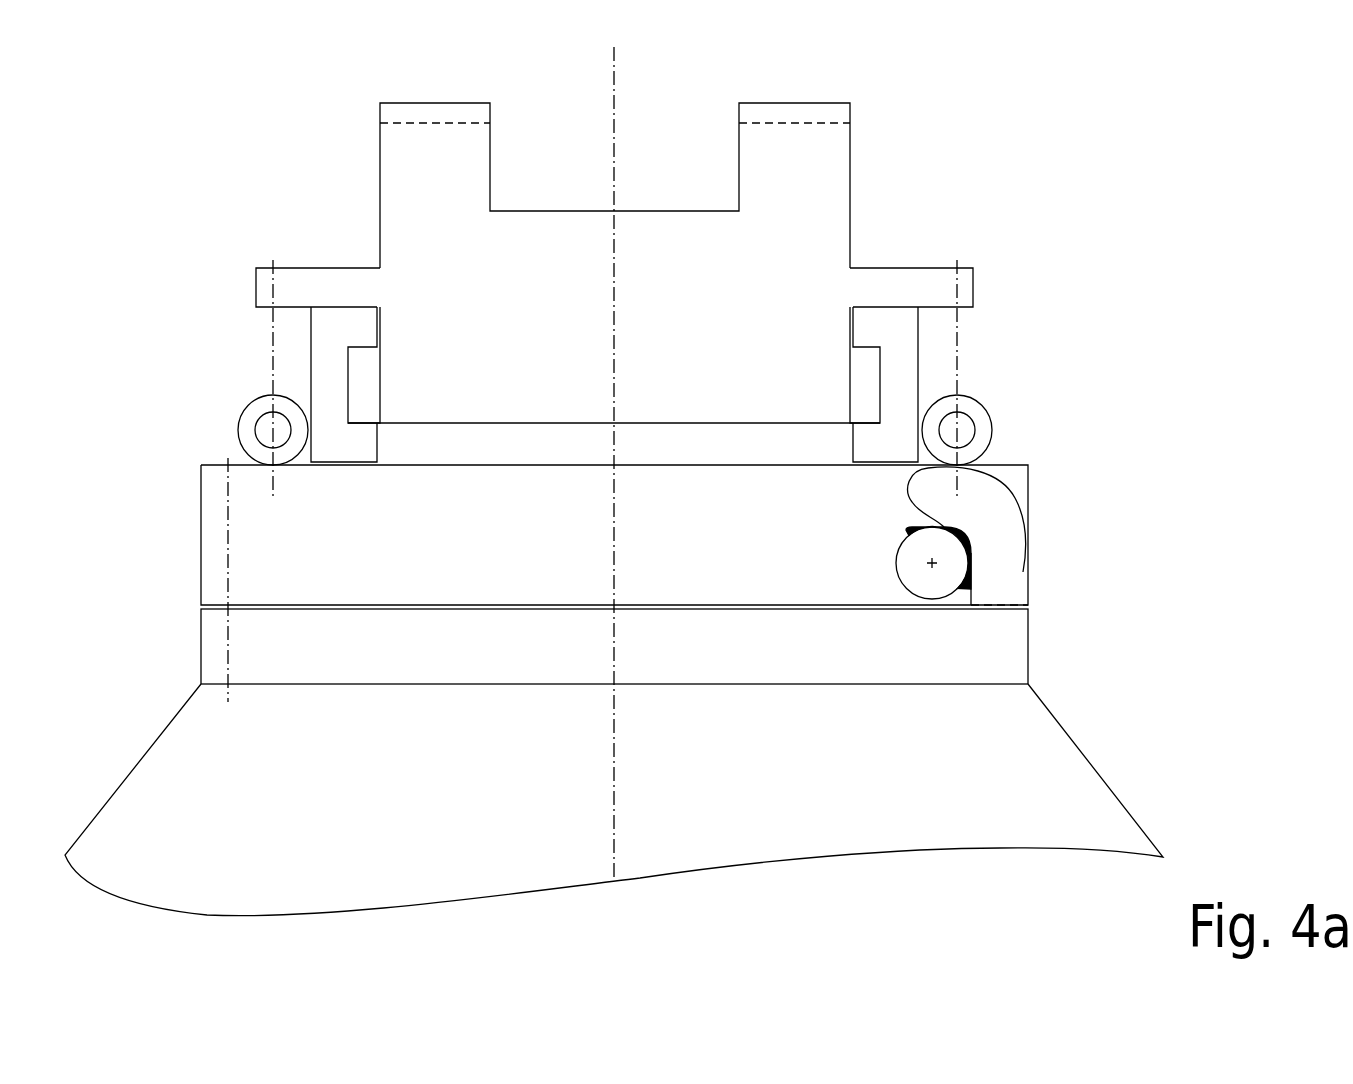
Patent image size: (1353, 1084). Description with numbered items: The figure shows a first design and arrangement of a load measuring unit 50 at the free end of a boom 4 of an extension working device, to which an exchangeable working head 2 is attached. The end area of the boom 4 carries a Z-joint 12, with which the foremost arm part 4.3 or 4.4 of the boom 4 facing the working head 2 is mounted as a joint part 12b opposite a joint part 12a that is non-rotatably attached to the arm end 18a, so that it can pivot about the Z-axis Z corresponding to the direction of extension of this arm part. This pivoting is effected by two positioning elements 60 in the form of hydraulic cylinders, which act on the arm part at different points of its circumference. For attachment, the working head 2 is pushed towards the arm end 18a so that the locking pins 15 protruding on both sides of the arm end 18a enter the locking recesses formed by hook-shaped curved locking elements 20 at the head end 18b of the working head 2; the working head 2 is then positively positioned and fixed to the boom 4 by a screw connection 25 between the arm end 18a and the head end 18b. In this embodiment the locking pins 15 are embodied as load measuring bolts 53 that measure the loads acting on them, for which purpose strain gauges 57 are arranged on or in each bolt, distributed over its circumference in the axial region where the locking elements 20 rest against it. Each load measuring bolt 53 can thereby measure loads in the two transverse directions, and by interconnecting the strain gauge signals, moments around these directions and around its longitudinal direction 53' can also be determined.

The working head 2 is at (273, 815).
The boom 4 is at (671, 250).
The foremost arm part 4.3 is at (615, 171).
The receiving body 4.4 is at (615, 185).
The Z-joint 12 is at (671, 333).
The joint part 12a is at (330, 400).
The joint part 12b is at (315, 283).
The locking pin 15 is at (904, 592).
The arm end 18a is at (270, 590).
The head end 18b is at (300, 665).
The locking element 20 is at (976, 534).
The screw connection 25 is at (228, 560).
The load measuring unit 50 is at (990, 552).
The load measuring bolt 53 is at (880, 592).
The longitudinal direction 53' is at (888, 607).
The strain gauge 57 is at (912, 530).
The positioning element 60 is at (252, 417).
The Z-axis Z is at (614, 110).